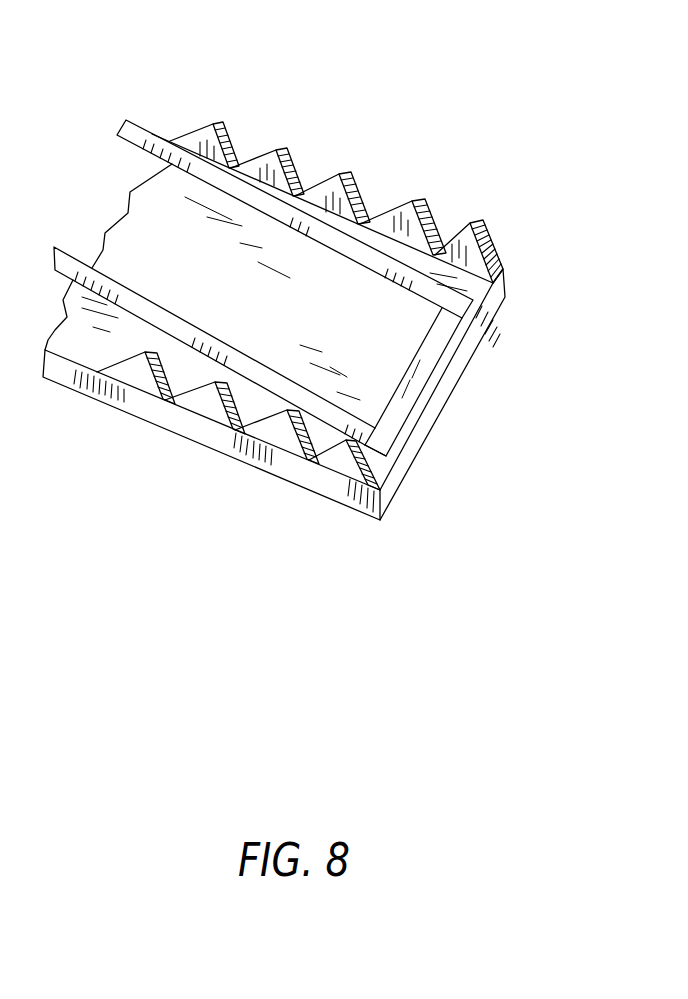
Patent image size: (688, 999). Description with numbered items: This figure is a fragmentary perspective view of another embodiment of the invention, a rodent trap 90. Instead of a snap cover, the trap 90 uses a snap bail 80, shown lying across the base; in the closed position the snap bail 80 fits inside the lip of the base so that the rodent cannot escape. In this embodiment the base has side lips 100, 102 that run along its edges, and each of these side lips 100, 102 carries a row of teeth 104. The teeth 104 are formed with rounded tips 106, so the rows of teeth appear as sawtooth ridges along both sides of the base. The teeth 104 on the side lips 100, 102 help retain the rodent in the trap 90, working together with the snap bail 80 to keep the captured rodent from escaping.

The snap bail 80 is at (139, 120).
The trap 90 is at (475, 112).
The side lip 100 is at (497, 250).
The side lip 102 is at (340, 460).
The teeth 104 is at (273, 453).
The rounded tips 106 is at (237, 120).